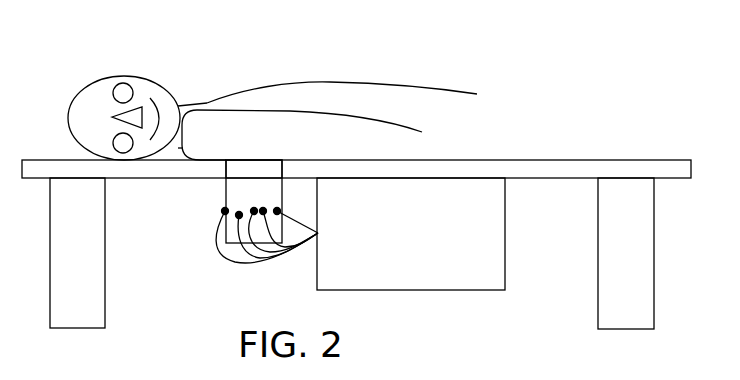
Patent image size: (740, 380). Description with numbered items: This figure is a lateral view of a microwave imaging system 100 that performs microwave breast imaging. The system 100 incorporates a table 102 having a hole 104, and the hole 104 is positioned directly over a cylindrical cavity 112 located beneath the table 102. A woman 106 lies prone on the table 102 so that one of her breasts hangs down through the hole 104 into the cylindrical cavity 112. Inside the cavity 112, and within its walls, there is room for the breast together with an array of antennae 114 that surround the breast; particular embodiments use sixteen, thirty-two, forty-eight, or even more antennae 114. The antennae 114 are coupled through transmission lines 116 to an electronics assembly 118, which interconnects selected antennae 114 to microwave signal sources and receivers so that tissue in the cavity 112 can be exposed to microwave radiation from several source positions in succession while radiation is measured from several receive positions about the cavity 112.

The microwave imaging system 100 is at (604, 69).
The table 102 is at (550, 168).
The hole 104 is at (258, 172).
The woman 106 is at (255, 95).
The cylindrical cavity 112 is at (243, 197).
The antennae 114 is at (277, 209).
The transmission lines 116 is at (238, 263).
The electronics assembly 118 is at (432, 246).